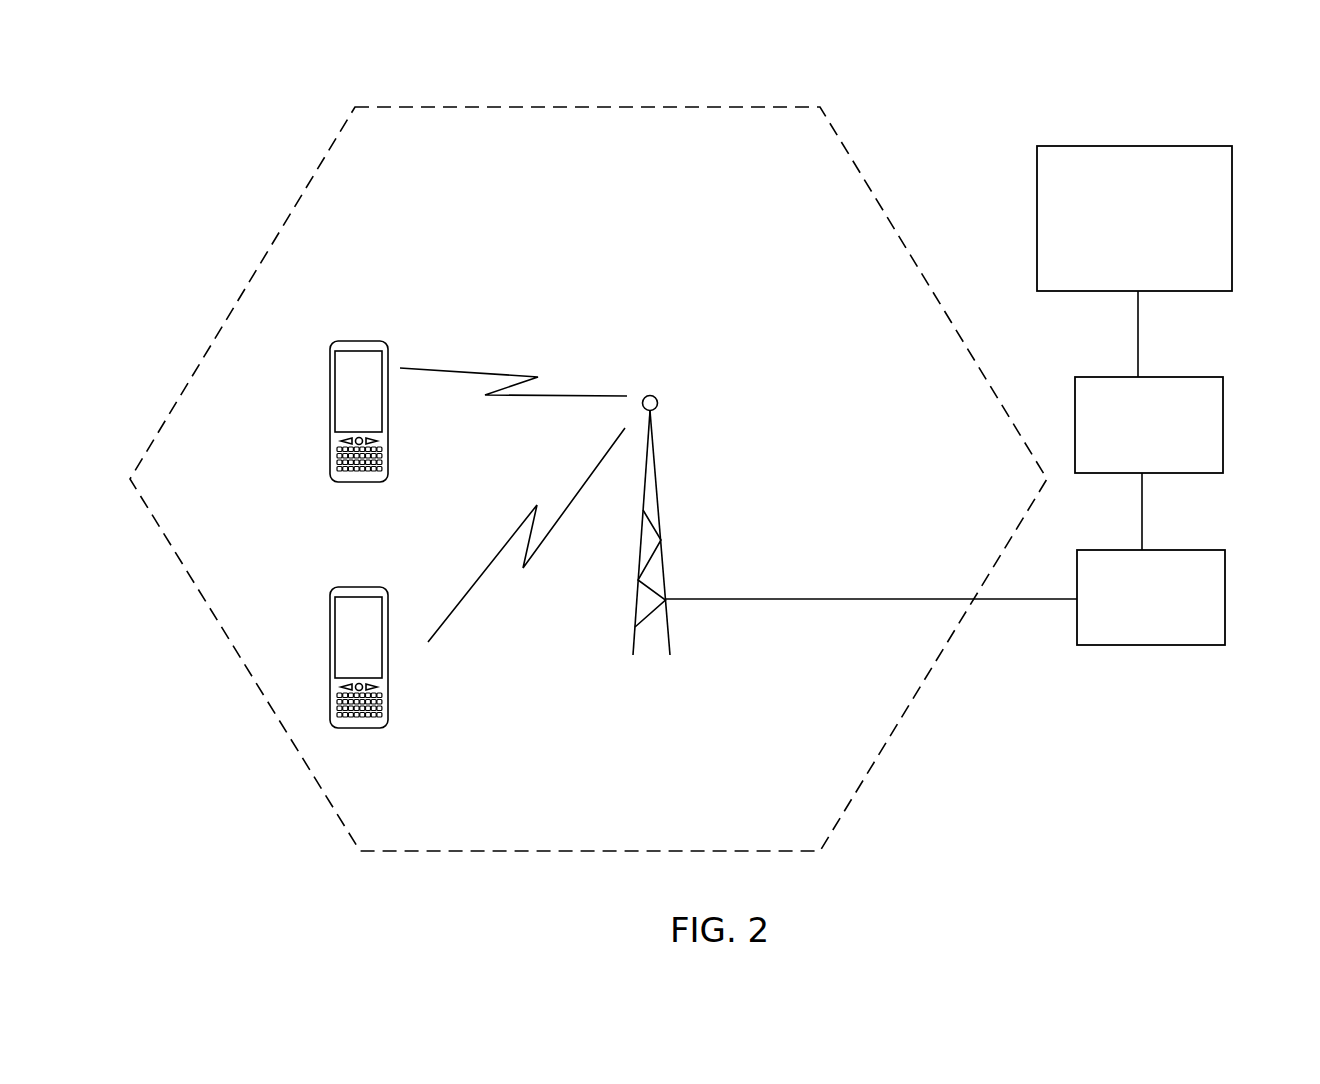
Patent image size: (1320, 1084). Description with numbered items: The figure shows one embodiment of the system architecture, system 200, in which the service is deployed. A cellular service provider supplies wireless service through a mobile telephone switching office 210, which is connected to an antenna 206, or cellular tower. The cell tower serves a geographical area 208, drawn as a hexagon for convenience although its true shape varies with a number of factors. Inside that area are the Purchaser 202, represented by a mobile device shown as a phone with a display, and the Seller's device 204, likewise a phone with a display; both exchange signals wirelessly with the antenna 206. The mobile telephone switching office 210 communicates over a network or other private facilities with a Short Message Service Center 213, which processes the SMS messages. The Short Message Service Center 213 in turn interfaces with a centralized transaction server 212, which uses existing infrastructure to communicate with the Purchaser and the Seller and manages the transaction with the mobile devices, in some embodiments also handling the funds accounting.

The system 200 is at (198, 222).
The Purchaser 202 is at (392, 348).
The Seller's device 204 is at (373, 733).
The antenna 206 is at (663, 455).
The geographical area 208 is at (640, 108).
The mobile telephone switching office 210 is at (1196, 645).
The centralized transaction server 212 is at (1053, 138).
The Short Message Service Center 213 is at (1222, 406).